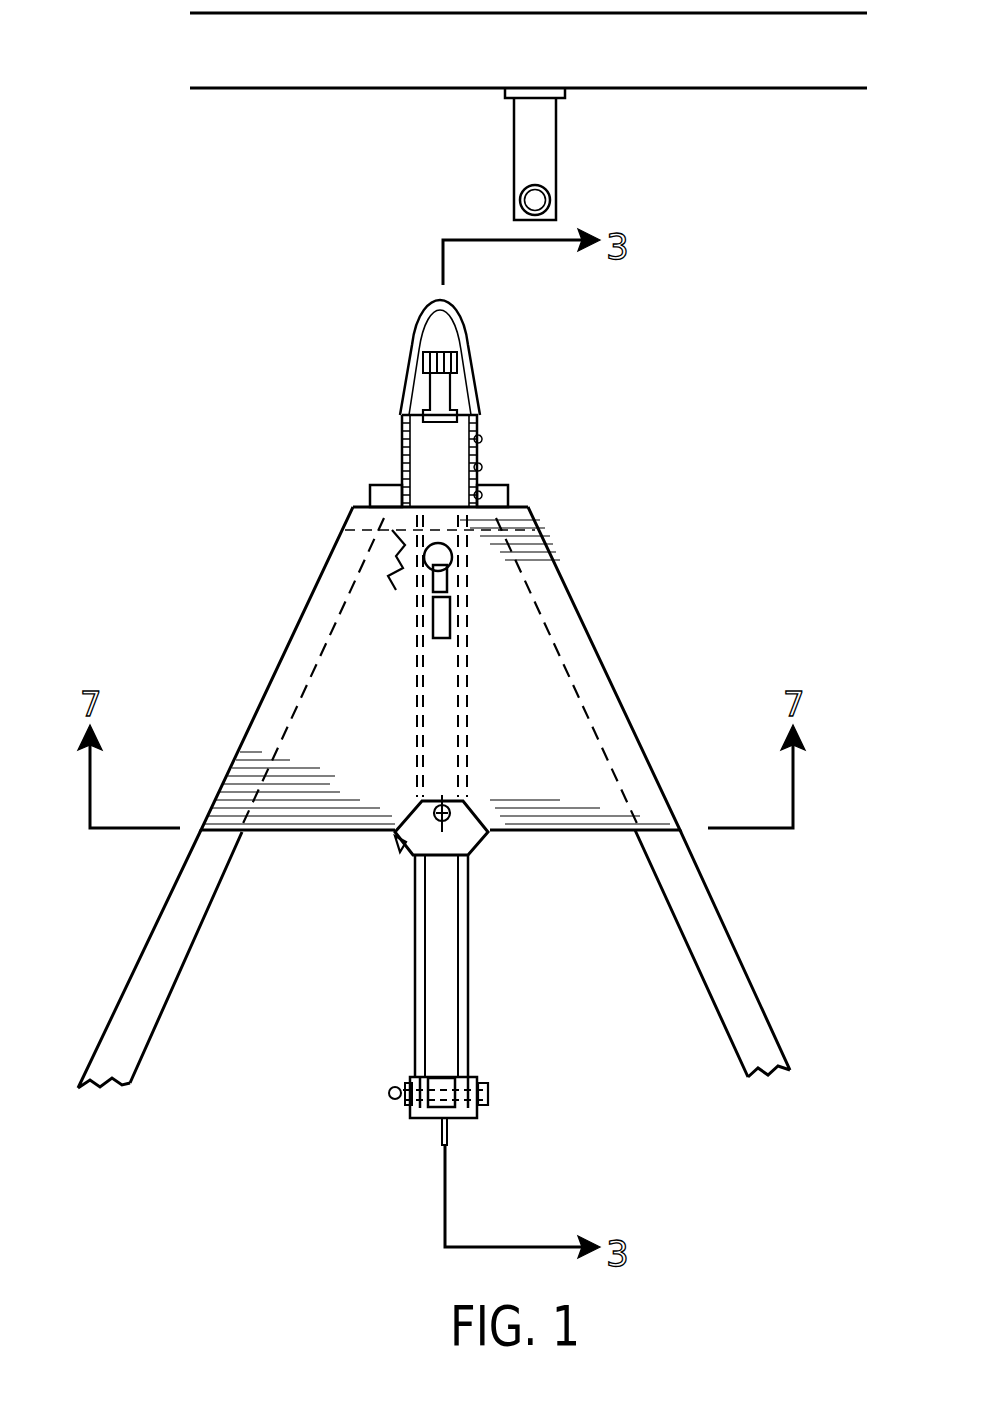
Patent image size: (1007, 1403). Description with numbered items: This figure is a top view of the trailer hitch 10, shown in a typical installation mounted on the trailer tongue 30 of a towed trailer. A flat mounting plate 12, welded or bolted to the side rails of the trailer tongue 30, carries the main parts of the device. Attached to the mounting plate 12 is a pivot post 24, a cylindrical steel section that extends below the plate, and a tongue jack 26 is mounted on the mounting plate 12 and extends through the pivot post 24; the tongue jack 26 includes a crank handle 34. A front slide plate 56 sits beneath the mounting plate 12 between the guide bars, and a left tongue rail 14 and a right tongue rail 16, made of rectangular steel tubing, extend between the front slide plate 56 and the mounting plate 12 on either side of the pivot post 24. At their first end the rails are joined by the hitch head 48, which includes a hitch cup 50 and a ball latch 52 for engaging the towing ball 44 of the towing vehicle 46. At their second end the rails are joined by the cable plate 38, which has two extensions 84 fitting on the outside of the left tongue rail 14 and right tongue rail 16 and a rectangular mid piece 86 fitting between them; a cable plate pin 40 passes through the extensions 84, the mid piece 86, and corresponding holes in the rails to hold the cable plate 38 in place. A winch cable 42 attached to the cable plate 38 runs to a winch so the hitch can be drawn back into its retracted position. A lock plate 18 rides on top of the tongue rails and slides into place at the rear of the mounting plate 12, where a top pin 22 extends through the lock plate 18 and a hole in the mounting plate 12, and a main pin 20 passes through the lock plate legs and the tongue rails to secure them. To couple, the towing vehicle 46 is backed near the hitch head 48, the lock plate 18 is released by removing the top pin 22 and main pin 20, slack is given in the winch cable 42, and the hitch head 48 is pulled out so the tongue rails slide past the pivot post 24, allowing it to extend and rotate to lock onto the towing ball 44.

The trailer hitch 10 is at (260, 327).
The mounting plate 12 is at (594, 690).
The left tongue rail 14 is at (415, 1010).
The right tongue rail 16 is at (470, 1000).
The lock plate 18 is at (472, 845).
The main pin 20 is at (398, 848).
The top pin 22 is at (452, 806).
The pivot post 24 is at (445, 568).
The tongue jack 26 is at (402, 552).
The trailer tongue 30 is at (155, 950).
The crank handle 34 is at (528, 535).
The cable plate 38 is at (478, 1116).
The cable plate pin 40 is at (490, 1094).
The winch cable 42 is at (440, 1130).
The towing ball 44 is at (532, 192).
The towing vehicle 46 is at (678, 15).
The hitch head 48 is at (448, 462).
The hitch cup 50 is at (454, 322).
The ball latch 52 is at (448, 392).
The front slide plate 56 is at (386, 492).
The extensions 84 is at (413, 1080).
The mid piece 86 is at (440, 1078).